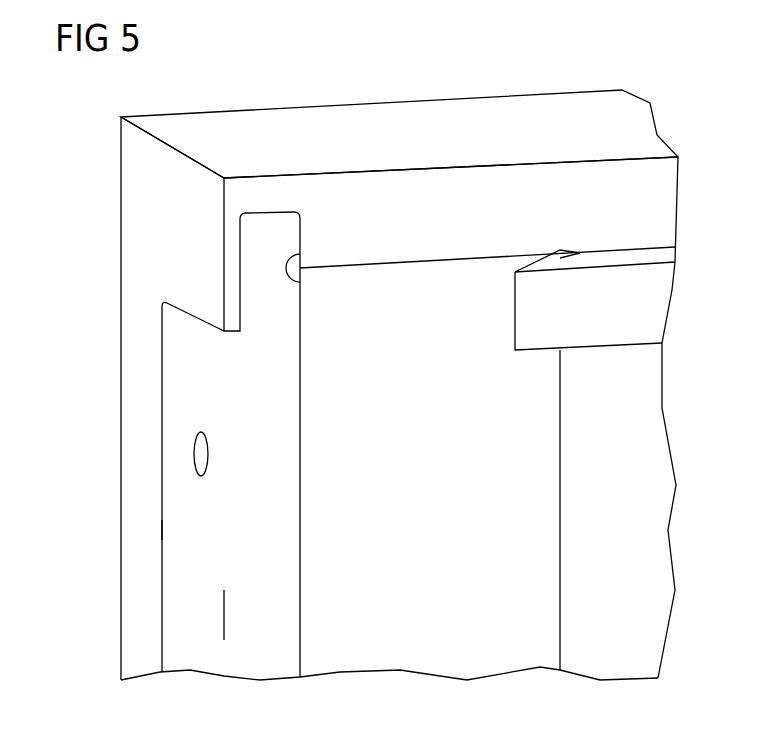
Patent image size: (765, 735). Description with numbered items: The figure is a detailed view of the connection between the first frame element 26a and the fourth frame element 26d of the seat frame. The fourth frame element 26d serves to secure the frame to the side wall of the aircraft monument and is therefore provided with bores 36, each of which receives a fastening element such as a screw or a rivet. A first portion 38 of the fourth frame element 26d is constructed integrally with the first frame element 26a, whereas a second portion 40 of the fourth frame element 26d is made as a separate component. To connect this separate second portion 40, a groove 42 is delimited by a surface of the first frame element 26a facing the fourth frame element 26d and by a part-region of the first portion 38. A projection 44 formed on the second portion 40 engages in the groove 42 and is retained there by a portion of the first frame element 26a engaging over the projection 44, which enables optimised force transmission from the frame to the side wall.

The first frame element 26a is at (320, 130).
The fourth frame element 26d is at (140, 208).
The bores 36 is at (195, 452).
The first portion 38 is at (140, 520).
The second portion 40 is at (205, 610).
The groove 42 is at (300, 284).
The projection 44 is at (290, 240).